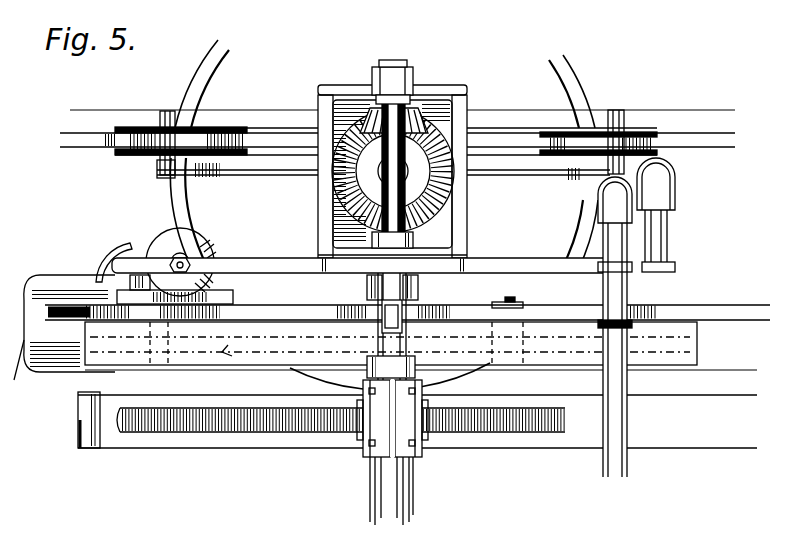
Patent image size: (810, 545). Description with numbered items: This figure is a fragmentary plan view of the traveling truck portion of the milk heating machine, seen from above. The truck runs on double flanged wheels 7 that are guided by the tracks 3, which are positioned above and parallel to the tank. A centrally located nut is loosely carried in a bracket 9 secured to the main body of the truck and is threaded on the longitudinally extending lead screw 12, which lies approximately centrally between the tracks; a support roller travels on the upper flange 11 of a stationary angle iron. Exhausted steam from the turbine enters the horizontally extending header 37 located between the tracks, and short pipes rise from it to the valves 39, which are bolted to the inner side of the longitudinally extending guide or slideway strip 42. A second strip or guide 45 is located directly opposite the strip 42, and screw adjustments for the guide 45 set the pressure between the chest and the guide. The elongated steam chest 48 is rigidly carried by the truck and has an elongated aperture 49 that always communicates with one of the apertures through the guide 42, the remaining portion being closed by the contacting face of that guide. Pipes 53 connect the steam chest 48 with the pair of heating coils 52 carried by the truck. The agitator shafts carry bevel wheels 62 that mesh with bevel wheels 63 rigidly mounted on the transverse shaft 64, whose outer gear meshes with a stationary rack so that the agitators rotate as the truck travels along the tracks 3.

The tracks 3 is at (114, 122).
The double flanged wheels 7 is at (146, 127).
The bracket 9 is at (414, 430).
The upper flange 11 is at (263, 438).
The lead screw 12 is at (306, 432).
The header 37 is at (44, 294).
The valves 39 is at (167, 238).
The guide or slideway strip 42 is at (297, 314).
The strip or guide 45 is at (58, 364).
The steam chest 48 is at (240, 352).
The elongated aperture 49 is at (222, 358).
The heating coils 52 is at (586, 91).
The pipes 53 is at (620, 298).
The bevel wheels 62 is at (432, 184).
The bevel wheels 63 is at (422, 117).
The transverse shaft 64 is at (388, 233).